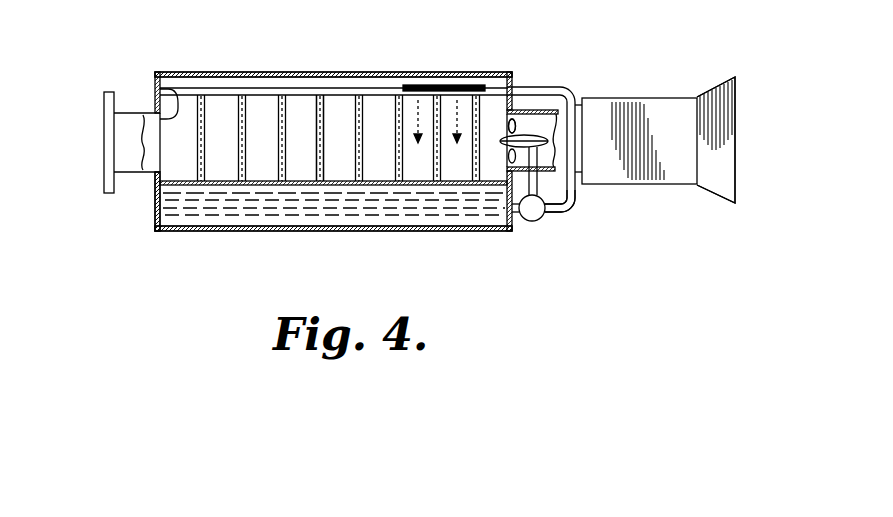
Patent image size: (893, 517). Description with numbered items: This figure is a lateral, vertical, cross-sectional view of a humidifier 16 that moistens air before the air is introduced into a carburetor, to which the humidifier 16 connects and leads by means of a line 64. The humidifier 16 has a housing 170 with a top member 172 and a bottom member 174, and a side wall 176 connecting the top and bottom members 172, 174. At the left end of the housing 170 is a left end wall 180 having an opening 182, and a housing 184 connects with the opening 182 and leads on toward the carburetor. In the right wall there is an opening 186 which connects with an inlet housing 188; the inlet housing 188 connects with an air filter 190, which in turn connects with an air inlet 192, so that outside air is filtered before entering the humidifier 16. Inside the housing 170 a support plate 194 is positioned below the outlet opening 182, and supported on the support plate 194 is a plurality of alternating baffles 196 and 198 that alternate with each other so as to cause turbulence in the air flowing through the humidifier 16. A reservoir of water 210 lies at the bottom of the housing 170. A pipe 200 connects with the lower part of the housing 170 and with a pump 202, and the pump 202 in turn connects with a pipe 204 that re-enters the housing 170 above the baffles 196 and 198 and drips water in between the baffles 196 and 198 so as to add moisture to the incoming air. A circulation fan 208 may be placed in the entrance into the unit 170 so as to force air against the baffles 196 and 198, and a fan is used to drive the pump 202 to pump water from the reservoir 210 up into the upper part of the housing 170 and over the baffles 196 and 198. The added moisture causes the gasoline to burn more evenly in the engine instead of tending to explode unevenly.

The humidifier 16 is at (645, 95).
The line 64 is at (128, 165).
The housing 170 is at (266, 234).
The top member 172 is at (190, 73).
The bottom member 174 is at (303, 233).
The side wall 176 is at (463, 50).
The left end wall 180 is at (155, 213).
The opening 182 is at (158, 94).
The housing 184 is at (120, 125).
The opening 186 is at (508, 127).
The inlet housing 188 is at (535, 112).
The air filter 190 is at (650, 171).
The air inlet 192 is at (723, 158).
The support plate 194 is at (378, 183).
The baffle 196 is at (288, 105).
The baffle 198 is at (328, 105).
The pipe 200 is at (515, 227).
The pump 202 is at (532, 222).
The pipe 204 is at (553, 217).
The circulation fan 208 is at (508, 150).
The reservoir of water 210 is at (217, 214).